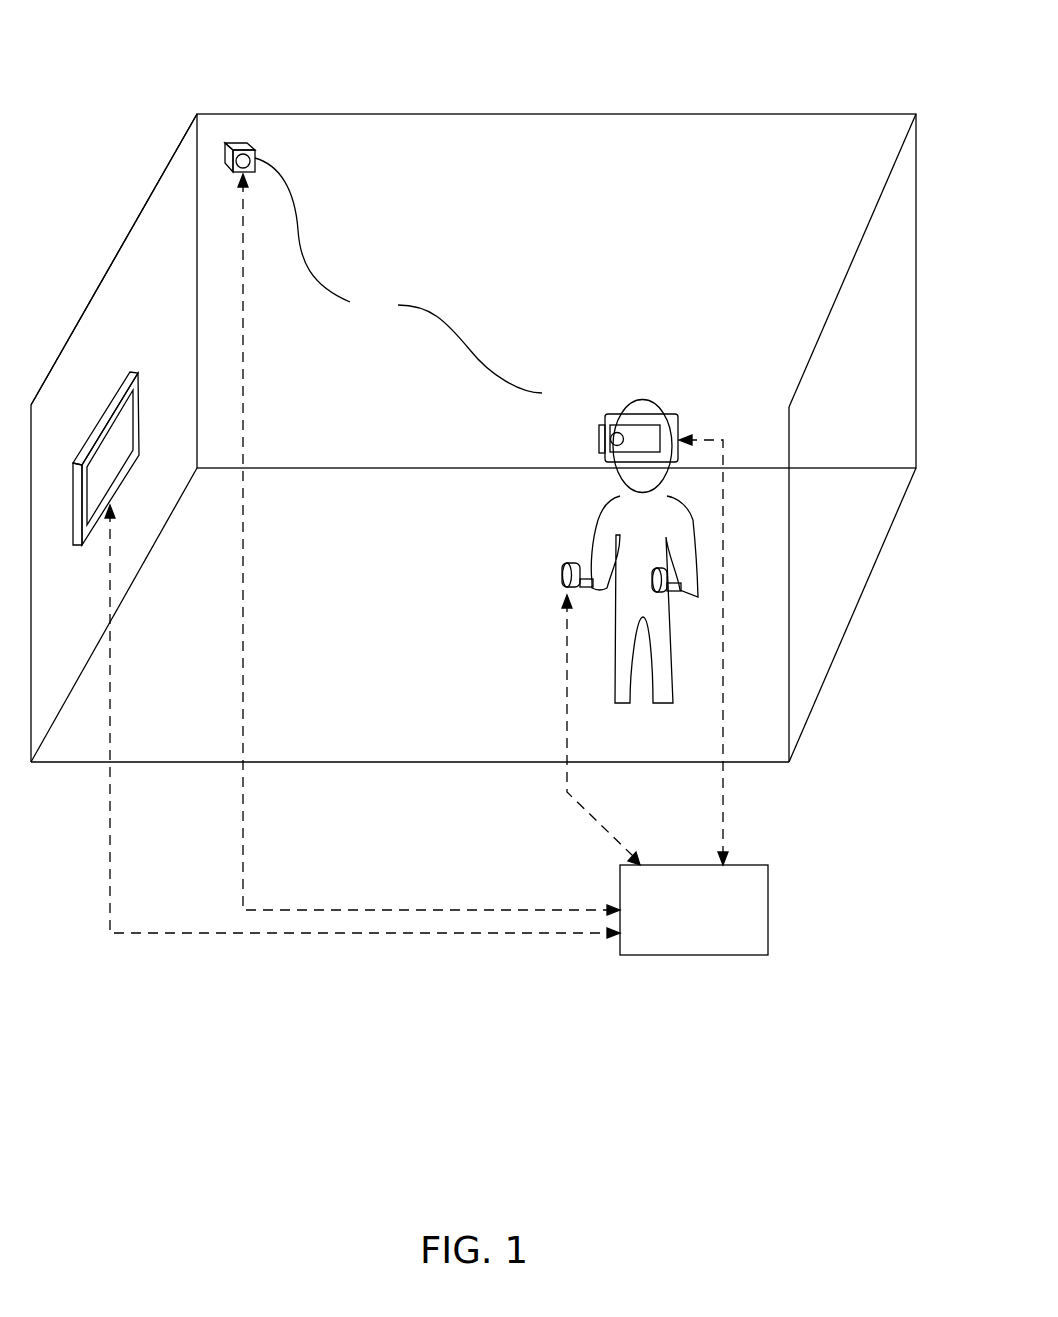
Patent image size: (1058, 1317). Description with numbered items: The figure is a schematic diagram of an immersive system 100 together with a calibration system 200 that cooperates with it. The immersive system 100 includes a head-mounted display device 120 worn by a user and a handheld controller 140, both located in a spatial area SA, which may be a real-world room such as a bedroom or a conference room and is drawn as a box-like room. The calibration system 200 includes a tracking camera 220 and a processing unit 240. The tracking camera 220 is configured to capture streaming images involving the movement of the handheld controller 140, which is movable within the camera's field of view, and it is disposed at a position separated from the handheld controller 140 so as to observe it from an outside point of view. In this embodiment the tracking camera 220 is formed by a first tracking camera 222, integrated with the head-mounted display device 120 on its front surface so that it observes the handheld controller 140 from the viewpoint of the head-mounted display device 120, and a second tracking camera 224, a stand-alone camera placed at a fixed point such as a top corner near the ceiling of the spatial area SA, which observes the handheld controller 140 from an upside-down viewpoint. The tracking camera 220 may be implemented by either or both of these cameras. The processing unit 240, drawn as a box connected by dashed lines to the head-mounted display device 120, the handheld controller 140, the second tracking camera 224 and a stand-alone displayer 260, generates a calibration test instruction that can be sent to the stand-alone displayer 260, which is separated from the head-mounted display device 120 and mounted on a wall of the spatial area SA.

The immersive system 100 is at (724, 69).
The spatial area SA is at (124, 245).
The head-mounted display device 120 is at (603, 457).
The handheld controller 140 is at (562, 578).
The calibration system 200 is at (536, 988).
The tracking camera 220 is at (398, 275).
The first tracking camera 222 is at (611, 435).
The second tracking camera 224 is at (228, 152).
The processing unit 240 is at (708, 957).
The stand-alone displayer 260 is at (140, 390).